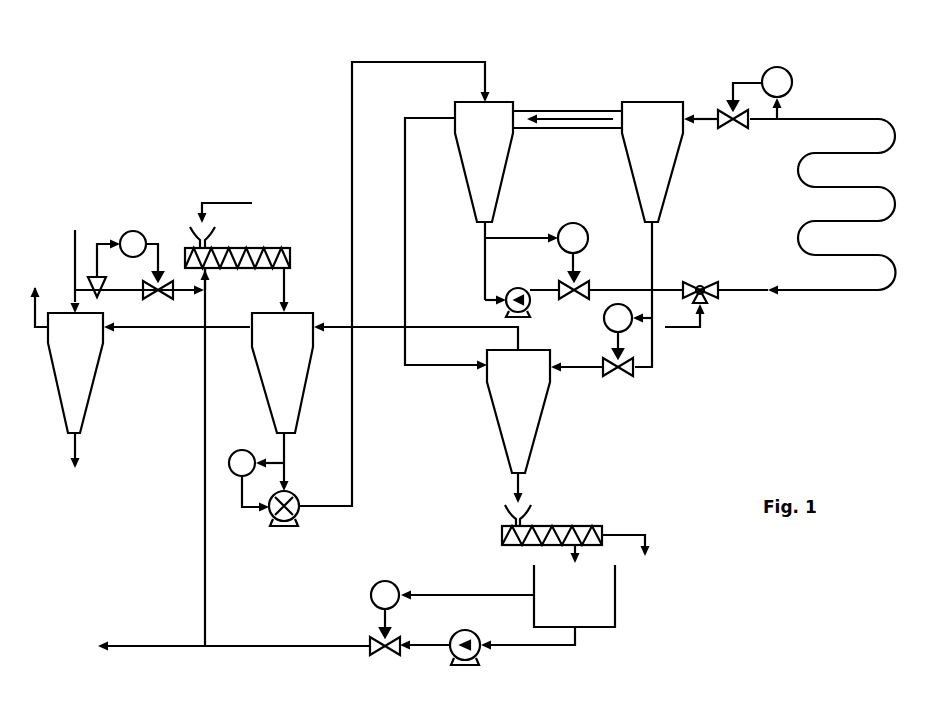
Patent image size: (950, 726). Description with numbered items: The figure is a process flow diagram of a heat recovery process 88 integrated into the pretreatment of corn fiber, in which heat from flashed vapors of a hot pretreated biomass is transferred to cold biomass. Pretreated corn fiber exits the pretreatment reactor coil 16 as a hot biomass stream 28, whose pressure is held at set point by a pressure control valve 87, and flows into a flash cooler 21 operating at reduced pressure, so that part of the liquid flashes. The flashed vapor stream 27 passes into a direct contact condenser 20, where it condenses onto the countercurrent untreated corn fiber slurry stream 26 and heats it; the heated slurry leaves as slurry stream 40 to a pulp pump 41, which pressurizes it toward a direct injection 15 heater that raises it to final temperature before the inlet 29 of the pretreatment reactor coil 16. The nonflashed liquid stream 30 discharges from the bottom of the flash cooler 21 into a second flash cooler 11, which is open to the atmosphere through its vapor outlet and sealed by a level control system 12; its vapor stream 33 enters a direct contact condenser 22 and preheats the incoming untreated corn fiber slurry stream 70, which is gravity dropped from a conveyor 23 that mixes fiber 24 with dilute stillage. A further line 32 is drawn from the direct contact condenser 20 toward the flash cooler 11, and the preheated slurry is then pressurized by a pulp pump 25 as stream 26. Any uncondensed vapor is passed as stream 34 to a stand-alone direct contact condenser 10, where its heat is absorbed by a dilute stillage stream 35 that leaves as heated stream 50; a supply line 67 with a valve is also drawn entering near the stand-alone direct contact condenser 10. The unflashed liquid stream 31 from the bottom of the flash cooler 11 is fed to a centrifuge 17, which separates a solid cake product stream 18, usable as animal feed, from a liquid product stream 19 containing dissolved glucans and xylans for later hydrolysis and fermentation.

The stand-alone direct contact condenser 10 is at (55, 378).
The flash cooler 11 is at (542, 412).
The level control system 12 is at (640, 340).
The direct injection 15 is at (712, 303).
The pretreatment reactor coil 16 is at (896, 203).
The centrifuge 17 is at (590, 526).
The stream (solid cake product) 18 is at (650, 542).
The stream (liquid product) 19 is at (570, 552).
The direct contact condenser 20 is at (507, 165).
The flash cooler 21 is at (630, 160).
The direct contact condenser 22 is at (257, 373).
The conveyor 23 is at (268, 248).
The fiber 24 is at (235, 203).
The pulp pump 25 is at (268, 516).
The untreated corn fiber slurry stream 26 is at (410, 62).
The flashed vapor stream 27 is at (603, 110).
The hot biomass stream 28 is at (822, 119).
The inlet 29 is at (755, 290).
The nonflashed liquid stream 30 is at (653, 255).
The unflashed liquid stream 31 is at (517, 483).
The gas line 32 is at (438, 366).
The vapor stream 33 is at (472, 328).
The stream (uncondensed vapor) 34 is at (230, 330).
The dilute stillage stream 35 is at (75, 238).
The slurry stream 40 is at (484, 278).
The pulp pump 41 is at (530, 303).
The stream (heated dilute stillage) 50 is at (77, 443).
The supply line 67 is at (125, 291).
The untreated corn fiber slurry stream 70 is at (285, 285).
The pressure control valve 87 is at (735, 80).
The heat recovery process 88 is at (777, 385).